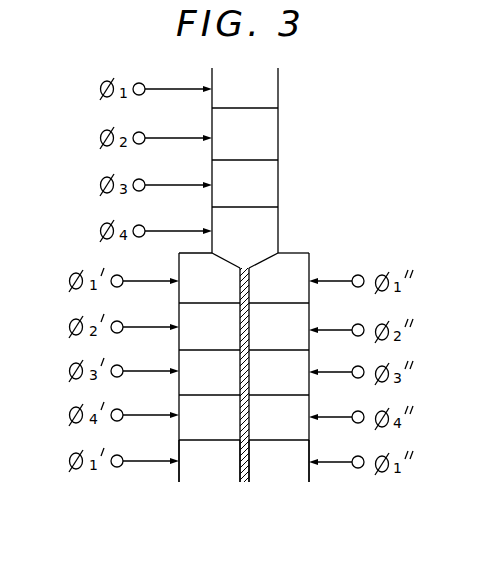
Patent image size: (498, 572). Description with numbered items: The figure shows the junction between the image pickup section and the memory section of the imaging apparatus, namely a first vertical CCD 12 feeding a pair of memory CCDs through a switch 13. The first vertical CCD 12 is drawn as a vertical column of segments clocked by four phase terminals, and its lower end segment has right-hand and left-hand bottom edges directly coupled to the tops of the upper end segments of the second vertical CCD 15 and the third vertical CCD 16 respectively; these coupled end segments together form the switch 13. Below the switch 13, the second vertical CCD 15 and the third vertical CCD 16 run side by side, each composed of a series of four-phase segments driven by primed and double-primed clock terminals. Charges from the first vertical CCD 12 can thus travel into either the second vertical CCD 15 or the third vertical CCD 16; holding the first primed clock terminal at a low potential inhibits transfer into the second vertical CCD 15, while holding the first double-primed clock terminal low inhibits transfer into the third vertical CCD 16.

The first vertical CCD 12 is at (299, 114).
The switch 13 is at (292, 246).
The second vertical CCD 15 is at (200, 474).
The third vertical CCD 16 is at (273, 474).